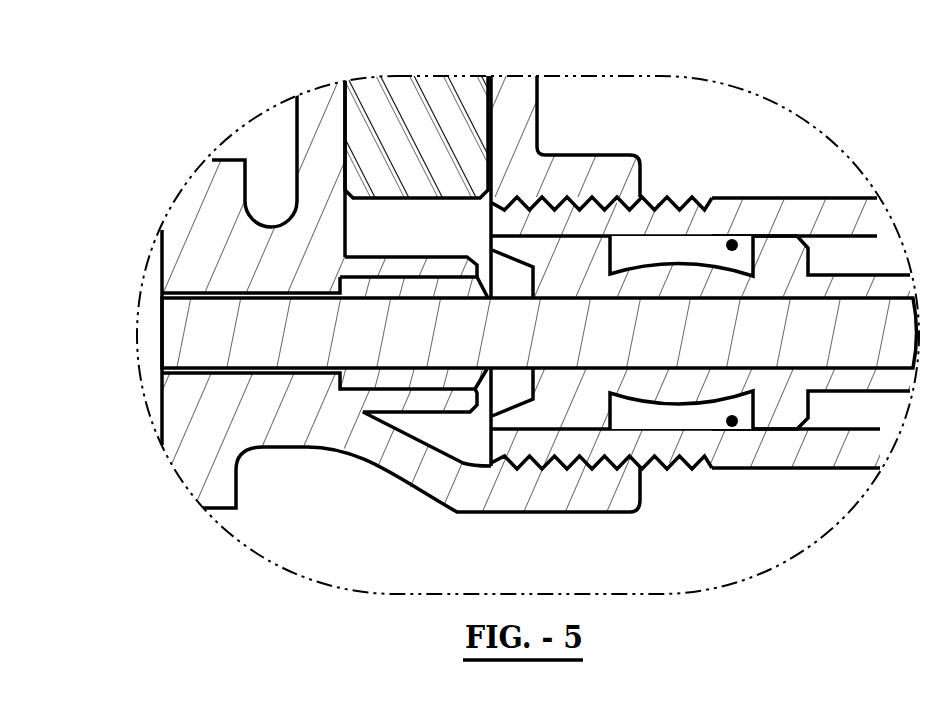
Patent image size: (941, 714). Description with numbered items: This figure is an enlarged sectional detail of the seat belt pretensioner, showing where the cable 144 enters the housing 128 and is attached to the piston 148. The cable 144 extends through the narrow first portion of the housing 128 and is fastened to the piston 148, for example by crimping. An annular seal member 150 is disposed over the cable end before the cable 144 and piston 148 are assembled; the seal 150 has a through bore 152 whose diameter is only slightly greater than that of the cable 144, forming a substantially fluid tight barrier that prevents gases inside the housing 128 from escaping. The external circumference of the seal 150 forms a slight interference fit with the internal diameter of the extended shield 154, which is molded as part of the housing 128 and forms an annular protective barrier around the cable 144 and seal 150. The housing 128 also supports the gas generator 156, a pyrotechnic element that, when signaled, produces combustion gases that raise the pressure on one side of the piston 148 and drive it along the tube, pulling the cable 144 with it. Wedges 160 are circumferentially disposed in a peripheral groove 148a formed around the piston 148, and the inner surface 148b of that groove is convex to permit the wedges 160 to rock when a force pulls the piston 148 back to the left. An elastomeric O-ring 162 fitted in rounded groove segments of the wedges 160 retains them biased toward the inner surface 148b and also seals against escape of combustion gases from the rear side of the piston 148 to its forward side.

The housing 128 is at (377, 443).
The cable 144 is at (273, 327).
The piston 148 is at (573, 397).
The peripheral groove 148a is at (743, 236).
The inner surface of peripheral groove 148b is at (690, 390).
The annular seal member 150 is at (360, 290).
The through bore 152 is at (402, 299).
The extended shield 154 is at (453, 278).
The gas generator 156 is at (423, 95).
The wedges 160 is at (695, 253).
The O-ring 162 is at (734, 238).